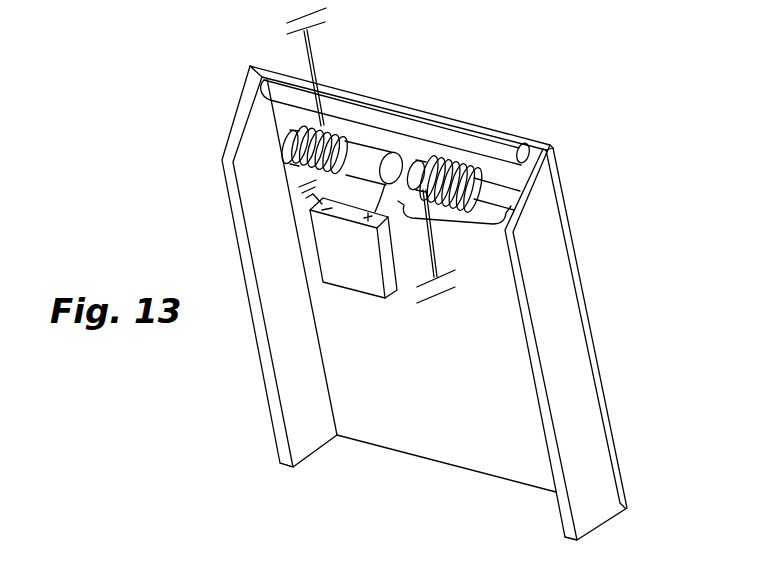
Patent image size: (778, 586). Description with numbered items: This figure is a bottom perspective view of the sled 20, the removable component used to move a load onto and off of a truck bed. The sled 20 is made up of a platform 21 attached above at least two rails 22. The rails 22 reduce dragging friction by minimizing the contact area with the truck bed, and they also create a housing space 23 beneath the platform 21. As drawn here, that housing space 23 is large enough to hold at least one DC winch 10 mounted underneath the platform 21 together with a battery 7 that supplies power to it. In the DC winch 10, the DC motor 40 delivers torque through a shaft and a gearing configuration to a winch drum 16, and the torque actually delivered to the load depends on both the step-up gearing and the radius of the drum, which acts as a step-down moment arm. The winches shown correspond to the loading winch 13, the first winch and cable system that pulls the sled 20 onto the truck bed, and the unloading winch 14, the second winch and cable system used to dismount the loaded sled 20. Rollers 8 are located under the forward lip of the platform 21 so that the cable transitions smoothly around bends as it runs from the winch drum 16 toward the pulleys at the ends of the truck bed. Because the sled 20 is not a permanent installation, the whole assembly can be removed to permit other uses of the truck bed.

The battery 7 is at (350, 273).
The rollers 8 is at (494, 147).
The DC winch 10 is at (340, 85).
The loading winch 13 is at (293, 133).
The unloading winch 14 is at (497, 184).
The winch drum 16 is at (350, 134).
The sled 20 is at (632, 312).
The platform 21 is at (595, 377).
The rails 22 is at (272, 392).
The housing space 23 is at (367, 421).
The DC motor 40 is at (374, 155).